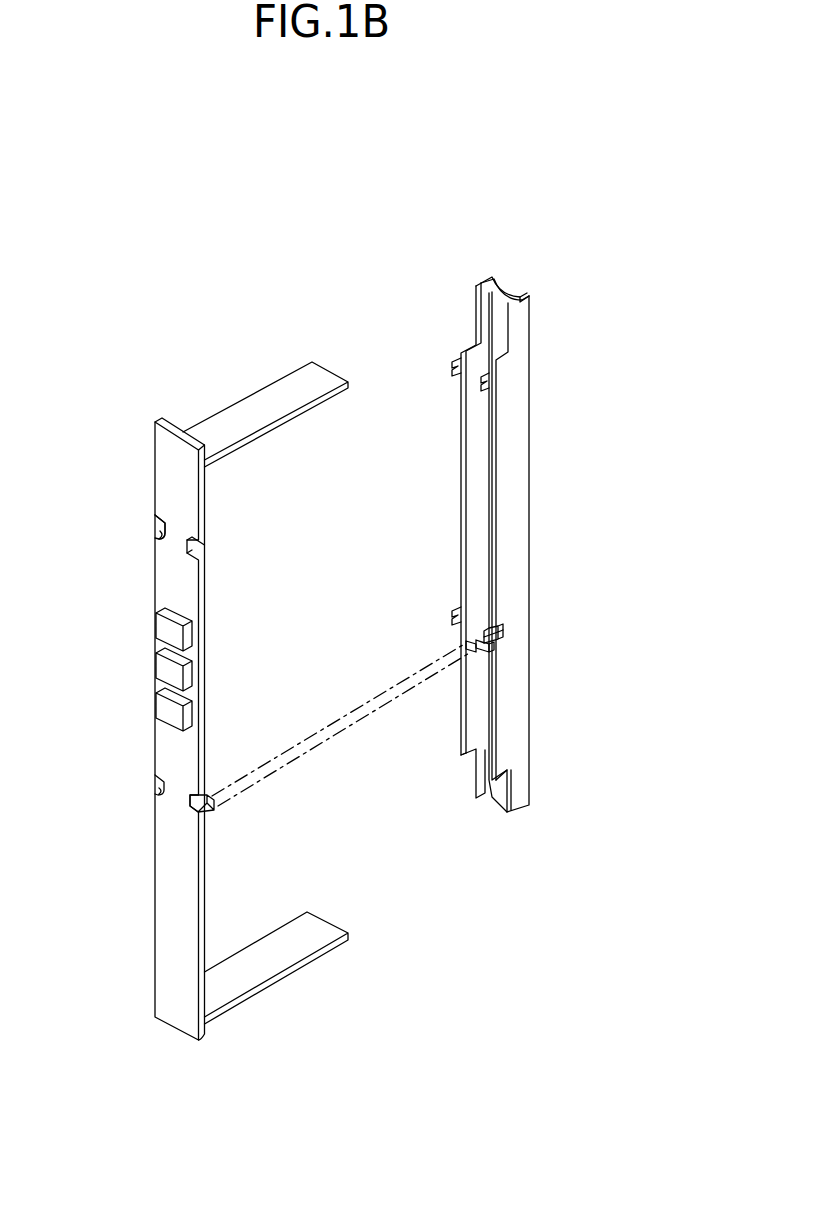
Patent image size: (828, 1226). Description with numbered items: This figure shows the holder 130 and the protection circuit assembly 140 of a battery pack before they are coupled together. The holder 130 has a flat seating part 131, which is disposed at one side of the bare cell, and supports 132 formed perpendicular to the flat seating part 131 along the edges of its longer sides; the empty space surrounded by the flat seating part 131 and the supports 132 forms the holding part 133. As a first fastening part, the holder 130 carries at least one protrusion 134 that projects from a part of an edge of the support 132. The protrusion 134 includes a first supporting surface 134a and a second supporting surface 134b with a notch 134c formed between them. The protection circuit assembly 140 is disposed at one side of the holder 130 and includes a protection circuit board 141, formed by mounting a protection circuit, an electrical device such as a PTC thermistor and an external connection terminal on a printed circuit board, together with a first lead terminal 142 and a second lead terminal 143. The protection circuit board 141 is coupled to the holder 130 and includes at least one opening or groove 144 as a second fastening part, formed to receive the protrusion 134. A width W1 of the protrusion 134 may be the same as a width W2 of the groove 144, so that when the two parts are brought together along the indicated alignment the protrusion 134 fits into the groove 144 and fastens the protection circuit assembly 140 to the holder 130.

The holder 130 is at (492, 266).
The flat seating part 131 is at (512, 286).
The support 132 is at (520, 432).
The holding part 133 is at (478, 477).
The protrusion 134 is at (643, 596).
The first supporting surface 134a is at (499, 648).
The second supporting surface 134b is at (498, 630).
The notch 134c is at (500, 640).
The protection circuit assembly 140 is at (312, 314).
The protection circuit board 141 is at (160, 881).
The first lead terminal 142 is at (260, 404).
The second lead terminal 143 is at (290, 930).
The groove 144 is at (160, 528).
The width of the protrusion W1 is at (477, 645).
The width of the groove W2 is at (212, 798).